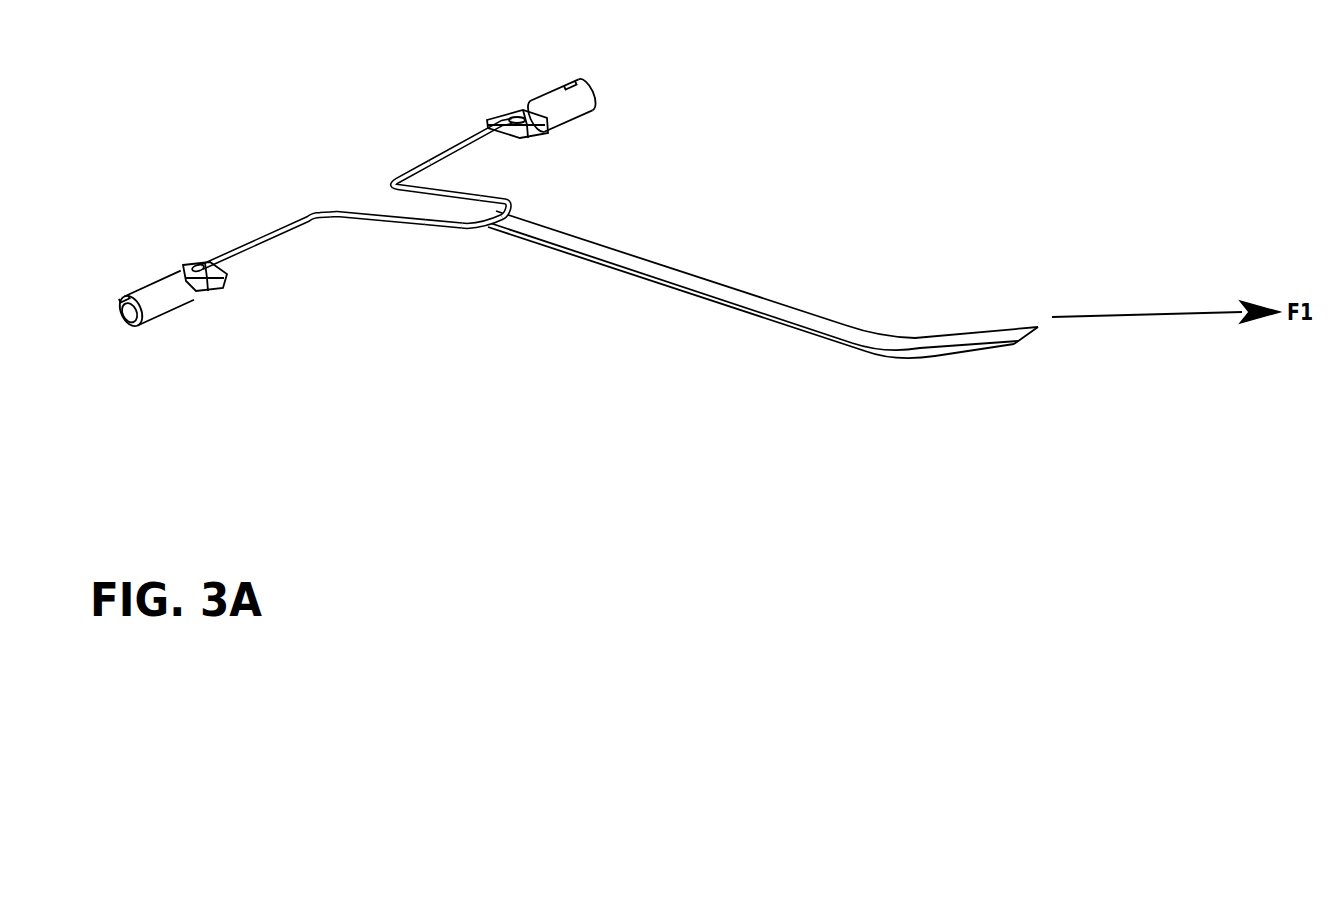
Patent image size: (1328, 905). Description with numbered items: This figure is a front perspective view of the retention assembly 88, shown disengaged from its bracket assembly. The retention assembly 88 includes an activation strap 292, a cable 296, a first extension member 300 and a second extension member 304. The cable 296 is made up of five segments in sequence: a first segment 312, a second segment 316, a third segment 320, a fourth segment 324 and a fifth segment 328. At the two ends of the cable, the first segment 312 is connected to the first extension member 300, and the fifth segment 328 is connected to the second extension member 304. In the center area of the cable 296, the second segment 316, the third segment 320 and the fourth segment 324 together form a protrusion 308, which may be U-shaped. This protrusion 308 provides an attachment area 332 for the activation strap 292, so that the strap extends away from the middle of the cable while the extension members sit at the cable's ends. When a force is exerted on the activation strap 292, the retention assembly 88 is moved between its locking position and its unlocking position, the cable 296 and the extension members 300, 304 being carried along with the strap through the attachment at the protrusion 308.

The retention assembly 88 is at (762, 269).
The activation strap 292 is at (880, 345).
The cable 296 is at (462, 138).
The first extension member 300 is at (160, 298).
The second extension member 304 is at (572, 105).
The protrusion 308 is at (443, 230).
The first segment 312 is at (255, 242).
The second segment 316 is at (363, 213).
The third segment 320 is at (477, 227).
The fourth segment 324 is at (507, 200).
The fifth segment 328 is at (438, 151).
The attachment area 332 is at (530, 222).